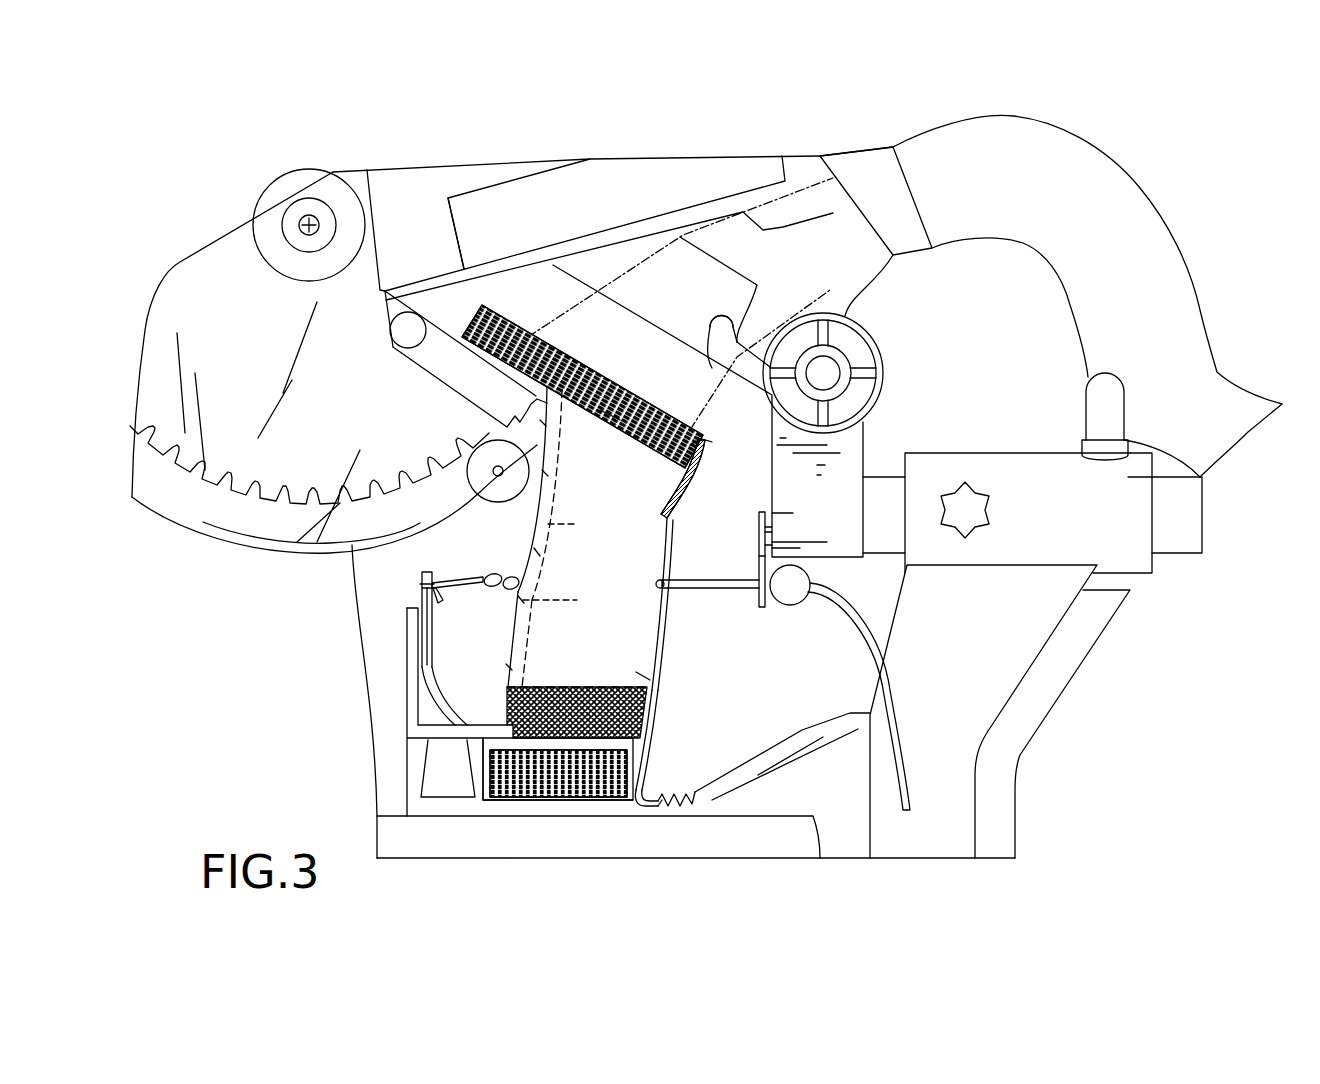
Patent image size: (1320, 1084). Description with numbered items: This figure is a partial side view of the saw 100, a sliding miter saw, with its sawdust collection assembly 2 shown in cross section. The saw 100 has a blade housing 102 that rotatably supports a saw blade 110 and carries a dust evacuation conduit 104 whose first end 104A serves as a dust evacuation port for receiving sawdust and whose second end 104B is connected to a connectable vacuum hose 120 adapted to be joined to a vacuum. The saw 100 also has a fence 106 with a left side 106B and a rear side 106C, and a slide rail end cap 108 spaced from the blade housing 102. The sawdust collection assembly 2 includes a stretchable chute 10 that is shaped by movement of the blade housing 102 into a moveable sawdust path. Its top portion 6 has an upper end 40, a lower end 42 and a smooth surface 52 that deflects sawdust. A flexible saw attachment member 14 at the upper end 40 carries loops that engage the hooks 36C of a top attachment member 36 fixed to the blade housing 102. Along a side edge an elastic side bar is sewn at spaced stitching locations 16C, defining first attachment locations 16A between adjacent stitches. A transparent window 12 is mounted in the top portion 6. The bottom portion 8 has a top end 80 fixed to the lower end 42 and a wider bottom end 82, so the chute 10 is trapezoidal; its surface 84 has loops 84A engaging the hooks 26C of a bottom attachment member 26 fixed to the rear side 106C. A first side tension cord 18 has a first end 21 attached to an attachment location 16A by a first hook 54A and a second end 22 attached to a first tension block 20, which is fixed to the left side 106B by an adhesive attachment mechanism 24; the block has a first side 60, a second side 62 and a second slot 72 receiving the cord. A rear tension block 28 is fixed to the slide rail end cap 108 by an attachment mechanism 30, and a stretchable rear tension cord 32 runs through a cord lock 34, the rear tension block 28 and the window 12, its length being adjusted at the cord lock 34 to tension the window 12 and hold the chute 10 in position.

The sawdust collection assembly 2 is at (711, 663).
The top portion 6 is at (513, 624).
The bottom portion 8 is at (670, 805).
The chute 10 is at (583, 463).
The window 12 is at (667, 511).
The saw attachment member 14 is at (693, 454).
The first attachment locations 16A is at (570, 562).
The stitching locations 16C is at (545, 500).
The first side tension cord 18 is at (456, 580).
The first tension block 20 is at (417, 650).
The first end 21 is at (481, 586).
The second end 22 is at (427, 607).
The attachment mechanism 24 is at (417, 640).
The bottom attachment member 26 is at (570, 800).
The hooks 26C is at (582, 770).
The rear tension block 28 is at (759, 517).
The attachment mechanism 30 is at (768, 533).
The rear tension cord 32 is at (696, 589).
The cord lock 34 is at (799, 606).
The top attachment member 36 is at (650, 402).
The hooks 36C is at (623, 420).
The upper end 40 is at (703, 442).
The lower end 42 is at (636, 676).
The surface 52 is at (650, 633).
The first hook 54A is at (494, 573).
The first side 60 is at (775, 548).
The second side 62 is at (759, 554).
The second slot 72 is at (422, 580).
The top end 80 is at (637, 674).
The bottom end 82 is at (697, 795).
The surface 84 is at (630, 795).
The loops 84A is at (613, 710).
The saw 100 is at (923, 383).
The blade housing 102 is at (668, 356).
The dust evacuation conduit 104 is at (762, 232).
The first end 104A is at (647, 458).
The second end 104B is at (870, 193).
The fence 106 is at (472, 747).
The left side 106B is at (410, 778).
The rear side 106C is at (520, 800).
The slide rail end cap 108 is at (833, 450).
The saw blade 110 is at (230, 493).
The connectable vacuum hose 120 is at (1135, 222).